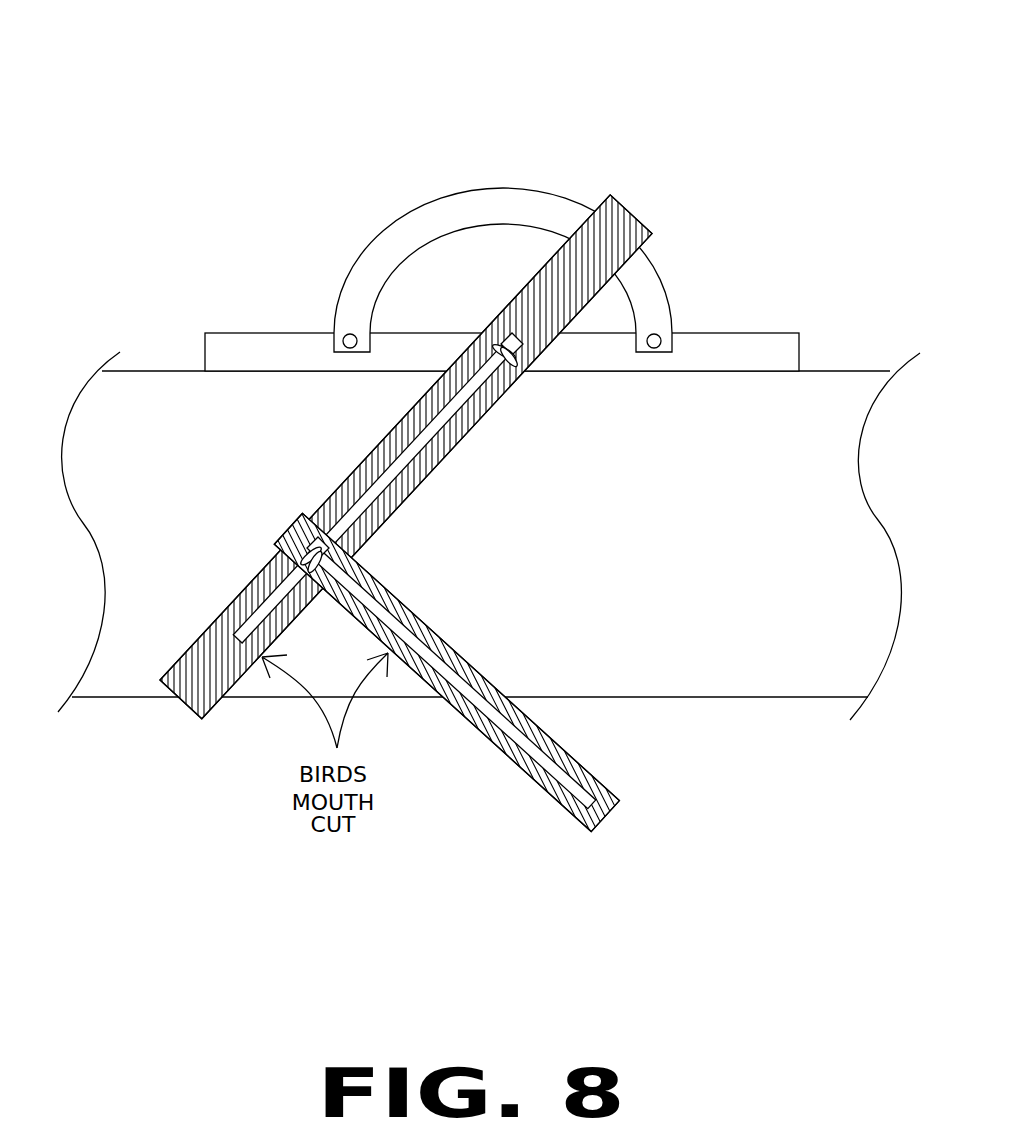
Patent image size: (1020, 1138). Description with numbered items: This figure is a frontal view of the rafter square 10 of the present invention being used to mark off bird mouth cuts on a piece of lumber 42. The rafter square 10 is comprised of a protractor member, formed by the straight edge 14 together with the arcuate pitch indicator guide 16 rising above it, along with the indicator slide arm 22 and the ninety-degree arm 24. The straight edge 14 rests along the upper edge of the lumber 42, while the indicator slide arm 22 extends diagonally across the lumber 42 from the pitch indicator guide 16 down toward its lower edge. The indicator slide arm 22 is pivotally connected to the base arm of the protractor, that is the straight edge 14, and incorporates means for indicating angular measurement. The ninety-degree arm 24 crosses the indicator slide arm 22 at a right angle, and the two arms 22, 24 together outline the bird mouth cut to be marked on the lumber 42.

The rafter square 10 is at (677, 129).
The straight edge 14 is at (743, 338).
The pitch indicator guide 16 is at (425, 198).
The indicator slide arm 22 is at (440, 462).
The 90-degree arm 24 is at (452, 645).
The lumber 42 is at (765, 700).